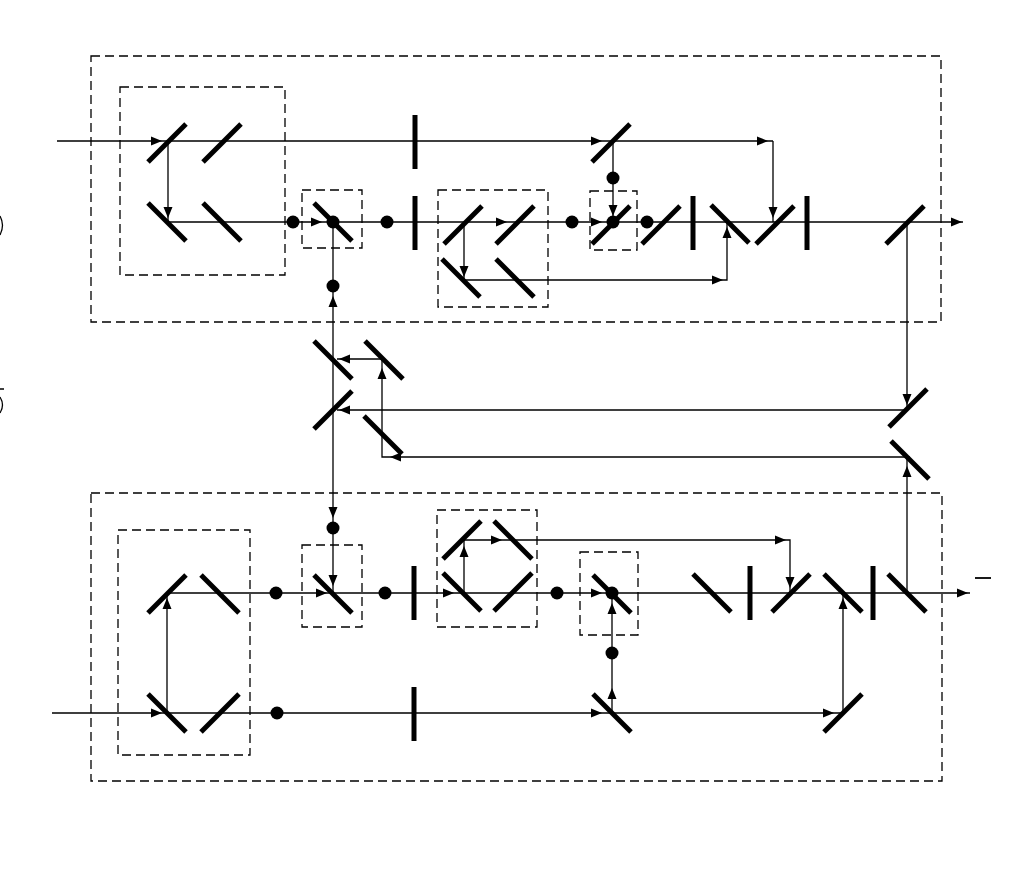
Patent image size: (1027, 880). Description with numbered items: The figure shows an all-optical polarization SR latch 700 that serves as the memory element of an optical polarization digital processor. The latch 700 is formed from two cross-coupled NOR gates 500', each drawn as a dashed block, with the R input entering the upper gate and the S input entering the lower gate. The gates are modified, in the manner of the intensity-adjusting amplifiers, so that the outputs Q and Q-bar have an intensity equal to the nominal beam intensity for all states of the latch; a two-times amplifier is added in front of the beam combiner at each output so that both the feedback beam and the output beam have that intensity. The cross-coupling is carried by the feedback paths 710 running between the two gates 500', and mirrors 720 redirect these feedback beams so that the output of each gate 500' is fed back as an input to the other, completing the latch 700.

The SR latch 700 is at (108, 42).
The NOR gate 500' is at (543, 397).
The optical interconnect waveguide 710 is at (907, 305).
The mirror 720 is at (330, 332).